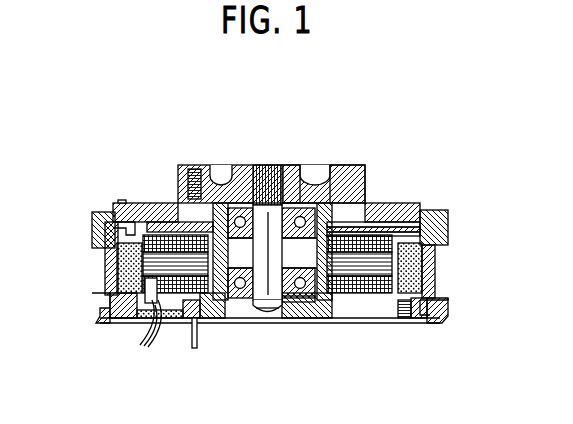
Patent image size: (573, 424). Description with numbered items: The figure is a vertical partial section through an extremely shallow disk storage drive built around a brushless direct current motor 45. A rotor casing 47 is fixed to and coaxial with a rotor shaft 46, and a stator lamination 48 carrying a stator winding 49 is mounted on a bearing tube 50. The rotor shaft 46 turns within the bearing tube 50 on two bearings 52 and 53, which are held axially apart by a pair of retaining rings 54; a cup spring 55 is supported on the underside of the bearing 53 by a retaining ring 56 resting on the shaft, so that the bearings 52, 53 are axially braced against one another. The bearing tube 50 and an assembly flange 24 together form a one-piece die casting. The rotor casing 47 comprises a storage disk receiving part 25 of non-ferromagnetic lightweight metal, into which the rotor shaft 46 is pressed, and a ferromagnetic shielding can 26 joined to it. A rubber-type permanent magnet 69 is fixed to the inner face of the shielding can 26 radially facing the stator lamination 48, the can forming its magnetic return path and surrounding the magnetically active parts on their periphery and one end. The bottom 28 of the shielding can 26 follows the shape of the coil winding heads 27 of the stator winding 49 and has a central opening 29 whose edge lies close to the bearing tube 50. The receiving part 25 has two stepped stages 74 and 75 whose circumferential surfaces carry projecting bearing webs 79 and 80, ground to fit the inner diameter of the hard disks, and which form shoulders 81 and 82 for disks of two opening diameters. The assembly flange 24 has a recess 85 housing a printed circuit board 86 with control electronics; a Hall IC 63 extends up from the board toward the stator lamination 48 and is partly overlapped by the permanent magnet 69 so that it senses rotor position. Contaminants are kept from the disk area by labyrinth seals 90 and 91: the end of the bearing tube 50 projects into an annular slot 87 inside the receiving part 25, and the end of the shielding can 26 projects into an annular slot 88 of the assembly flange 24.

The assembly flange 24 is at (445, 318).
The storage disk receiving part 25 is at (348, 165).
The shielding can 26 is at (110, 262).
The coil winding heads 27 is at (385, 205).
The bottom 28 is at (143, 227).
The central opening 29 is at (350, 224).
The brushless direct current motor 45 is at (498, 252).
The rotor shaft 46 is at (270, 170).
The rotor casing 47 is at (78, 239).
The stator lamination 48 is at (436, 273).
The stator winding 49 is at (372, 285).
The bearing tube 50 is at (437, 253).
The bearing 52 is at (308, 182).
The bearing 53 is at (318, 300).
The retaining rings 54 is at (232, 210).
The cup spring 55 is at (292, 303).
The retaining ring 56 is at (262, 318).
The Hall IC 63 is at (120, 315).
The permanent magnet 69 is at (128, 278).
The stepped stage 74 is at (372, 224).
The stepped stage 75 is at (186, 170).
The bearing webs 79 is at (118, 212).
The bearing webs 80 is at (180, 183).
The shoulder 81 is at (440, 212).
The shoulder 82 is at (388, 210).
The recess 85 is at (186, 318).
The printed circuit board 86 is at (150, 325).
The annular slot 87 is at (327, 178).
The annular slot 88 is at (420, 318).
The labyrinth seal 90 is at (230, 180).
The labyrinth seal 91 is at (445, 306).